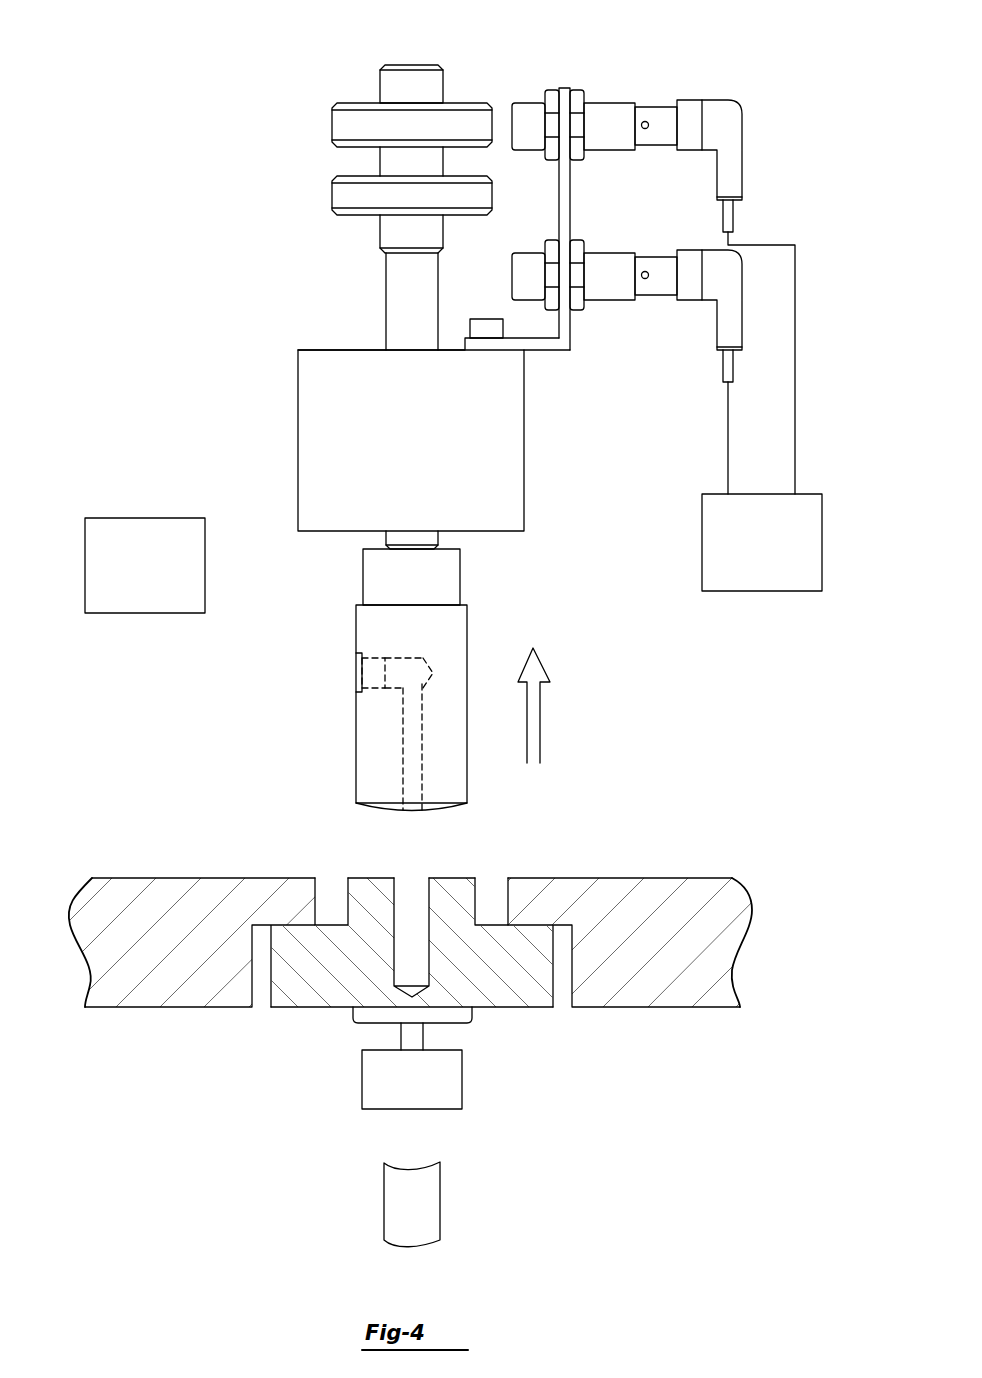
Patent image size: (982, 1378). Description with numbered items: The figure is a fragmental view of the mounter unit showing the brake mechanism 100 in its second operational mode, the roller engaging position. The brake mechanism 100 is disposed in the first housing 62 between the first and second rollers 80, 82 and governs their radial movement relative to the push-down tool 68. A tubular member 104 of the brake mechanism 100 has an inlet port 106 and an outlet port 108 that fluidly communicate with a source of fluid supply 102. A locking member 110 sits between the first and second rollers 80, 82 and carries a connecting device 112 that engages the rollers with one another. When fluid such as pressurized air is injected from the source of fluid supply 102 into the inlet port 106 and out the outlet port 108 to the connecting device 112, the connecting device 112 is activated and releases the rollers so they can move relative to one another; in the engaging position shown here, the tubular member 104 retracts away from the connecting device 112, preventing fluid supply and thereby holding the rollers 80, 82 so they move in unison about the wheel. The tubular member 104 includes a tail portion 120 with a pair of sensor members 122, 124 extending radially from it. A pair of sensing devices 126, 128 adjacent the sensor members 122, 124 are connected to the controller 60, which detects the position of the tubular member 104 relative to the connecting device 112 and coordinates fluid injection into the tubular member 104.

The controller 60 is at (766, 553).
The first housing 62 is at (136, 161).
The push-down tool 68 is at (413, 1199).
The first roller 80 is at (657, 895).
The second roller 82 is at (167, 900).
The brake mechanism 100 is at (136, 445).
The source of fluid supply 102 is at (163, 580).
The tubular member 104 is at (445, 626).
The inlet port 106 is at (356, 672).
The outlet port 108 is at (418, 812).
The locking member 110 is at (447, 1075).
The connecting device 112 is at (375, 878).
The tail portion 120 is at (403, 300).
The sensor member 122 is at (355, 122).
The sensor member 124 is at (355, 190).
The sensing device 126 is at (608, 117).
The sensing device 128 is at (605, 268).